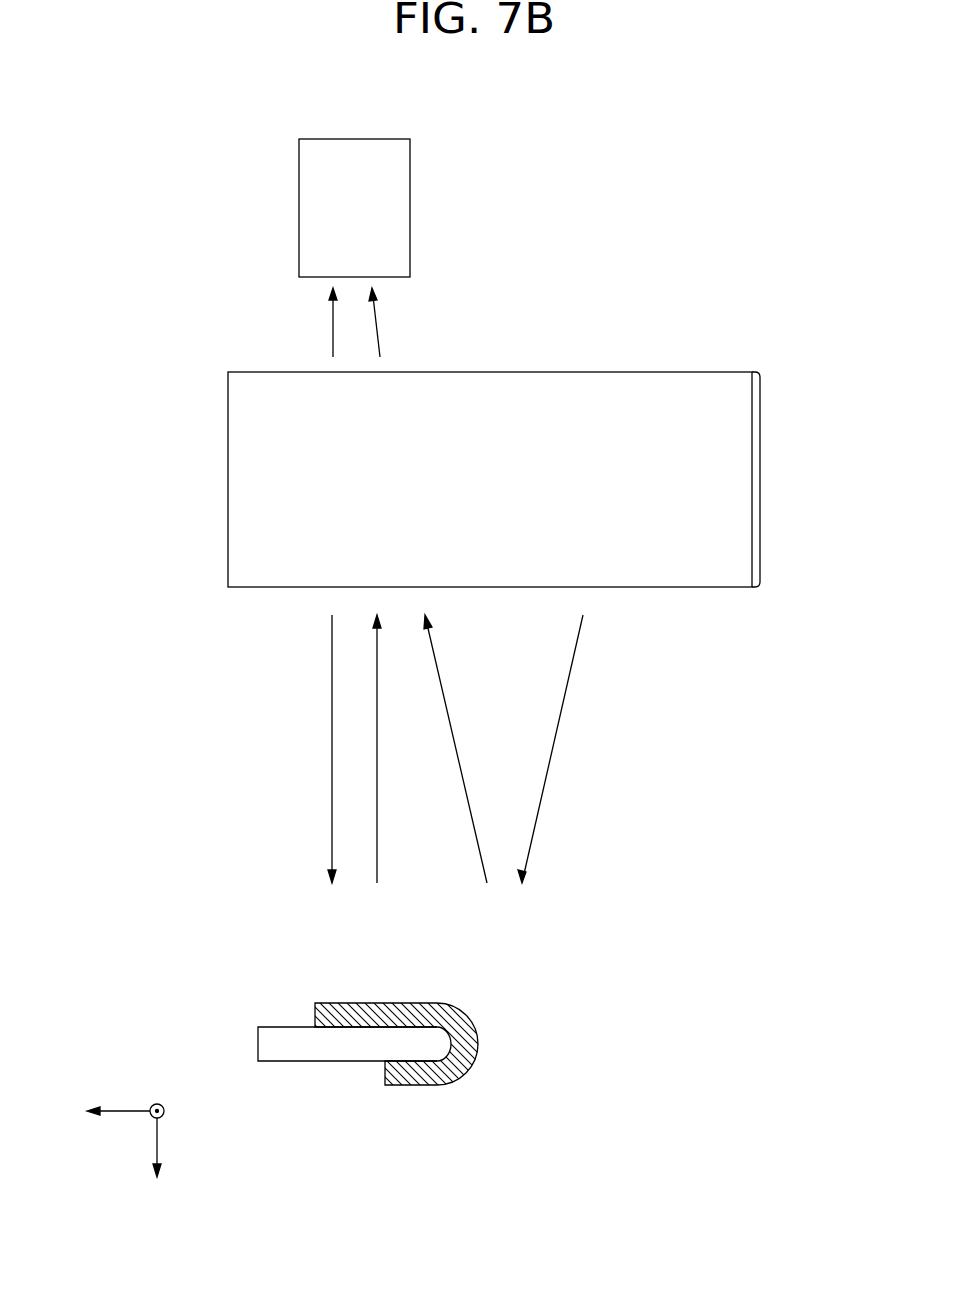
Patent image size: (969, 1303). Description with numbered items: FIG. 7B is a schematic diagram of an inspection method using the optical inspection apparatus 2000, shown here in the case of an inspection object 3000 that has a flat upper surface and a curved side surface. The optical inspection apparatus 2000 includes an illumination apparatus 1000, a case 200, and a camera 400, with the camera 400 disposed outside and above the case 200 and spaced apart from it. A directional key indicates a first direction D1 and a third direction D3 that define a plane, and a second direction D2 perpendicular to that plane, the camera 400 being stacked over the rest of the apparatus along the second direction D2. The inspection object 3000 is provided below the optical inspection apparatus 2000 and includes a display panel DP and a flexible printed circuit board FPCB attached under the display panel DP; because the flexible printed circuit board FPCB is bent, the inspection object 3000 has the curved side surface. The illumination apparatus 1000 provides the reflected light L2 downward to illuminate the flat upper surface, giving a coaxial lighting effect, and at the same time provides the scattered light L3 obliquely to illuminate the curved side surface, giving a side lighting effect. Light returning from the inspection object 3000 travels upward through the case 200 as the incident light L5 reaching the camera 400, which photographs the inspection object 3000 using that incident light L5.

The camera 400 is at (402, 234).
The case 200 is at (693, 384).
The illumination apparatus 1000 is at (760, 478).
The optical inspection apparatus 2000 is at (823, 218).
The inspection object 3000 is at (437, 1148).
The incident light L5 is at (354, 326).
The reflected light L2 is at (339, 749).
The scattered light L3 is at (506, 749).
The display panel DP is at (320, 1055).
The flexible printed circuit board FPCB is at (413, 1078).
The first direction D1 is at (106, 1110).
The second direction D2 is at (156, 1163).
The third direction D3 is at (156, 1095).